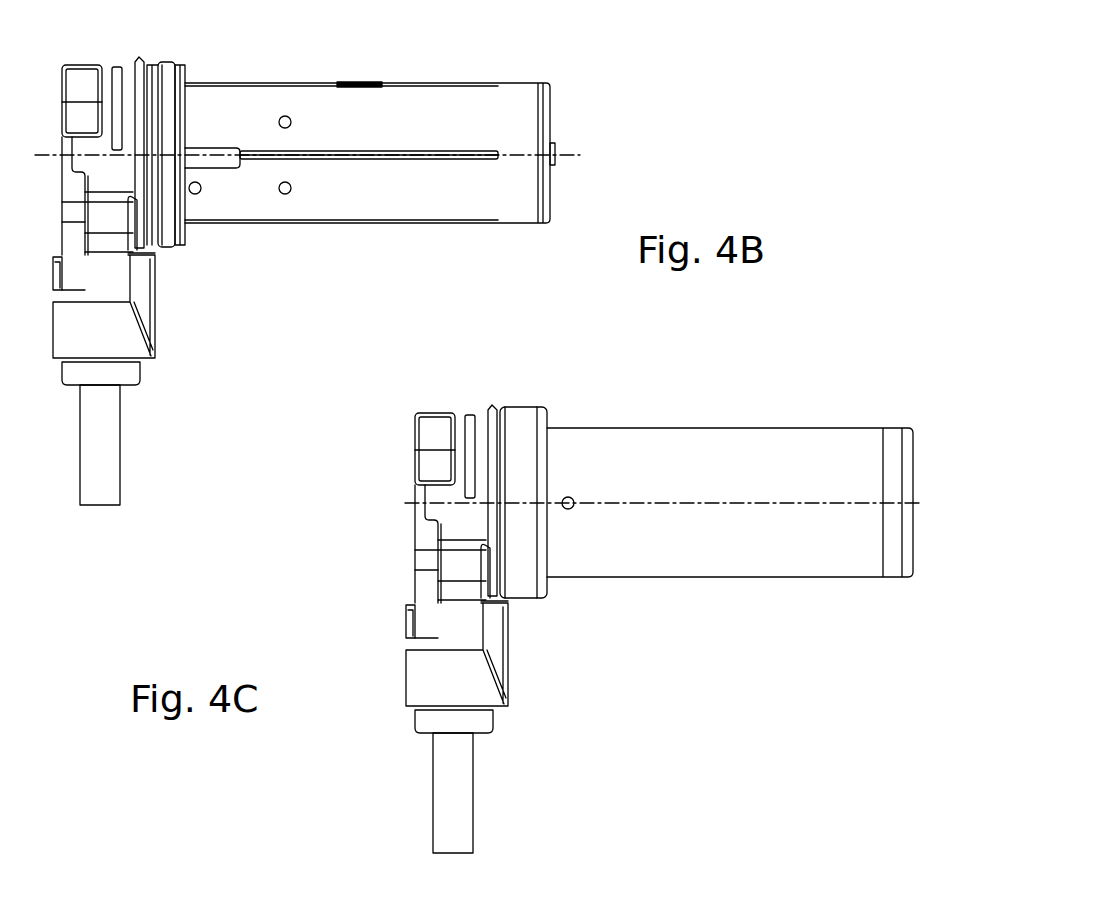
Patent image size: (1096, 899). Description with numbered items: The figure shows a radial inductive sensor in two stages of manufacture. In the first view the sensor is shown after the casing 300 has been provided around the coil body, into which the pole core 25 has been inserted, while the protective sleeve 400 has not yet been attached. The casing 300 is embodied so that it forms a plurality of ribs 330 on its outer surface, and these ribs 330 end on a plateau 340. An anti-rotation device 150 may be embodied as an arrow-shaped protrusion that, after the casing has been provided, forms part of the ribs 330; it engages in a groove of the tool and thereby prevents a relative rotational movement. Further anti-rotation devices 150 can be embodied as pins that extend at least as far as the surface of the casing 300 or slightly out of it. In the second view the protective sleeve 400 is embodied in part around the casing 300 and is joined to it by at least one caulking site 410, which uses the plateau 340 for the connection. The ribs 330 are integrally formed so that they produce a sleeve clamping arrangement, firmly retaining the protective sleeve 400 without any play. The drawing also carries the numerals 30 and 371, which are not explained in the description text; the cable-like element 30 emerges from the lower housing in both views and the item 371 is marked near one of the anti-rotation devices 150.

In FIG. 4B, the pole core 25 is at (555, 150).
In FIG. 4B, the cable 30 is at (113, 468).
In FIG. 4C, the cable 30 is at (467, 815).
In FIG. 4B, the anti-rotation device 150 is at (286, 116).
In FIG. 4B, the casing 300 is at (474, 218).
In FIG. 4B, the ribs 330 is at (452, 83).
In FIG. 4B, the plateau 340 is at (227, 140).
In FIG. 4B, the hole 371 is at (197, 193).
In FIG. 4C, the protective sleeve 400 is at (722, 567).
In FIG. 4C, the caulking site 410 is at (568, 509).